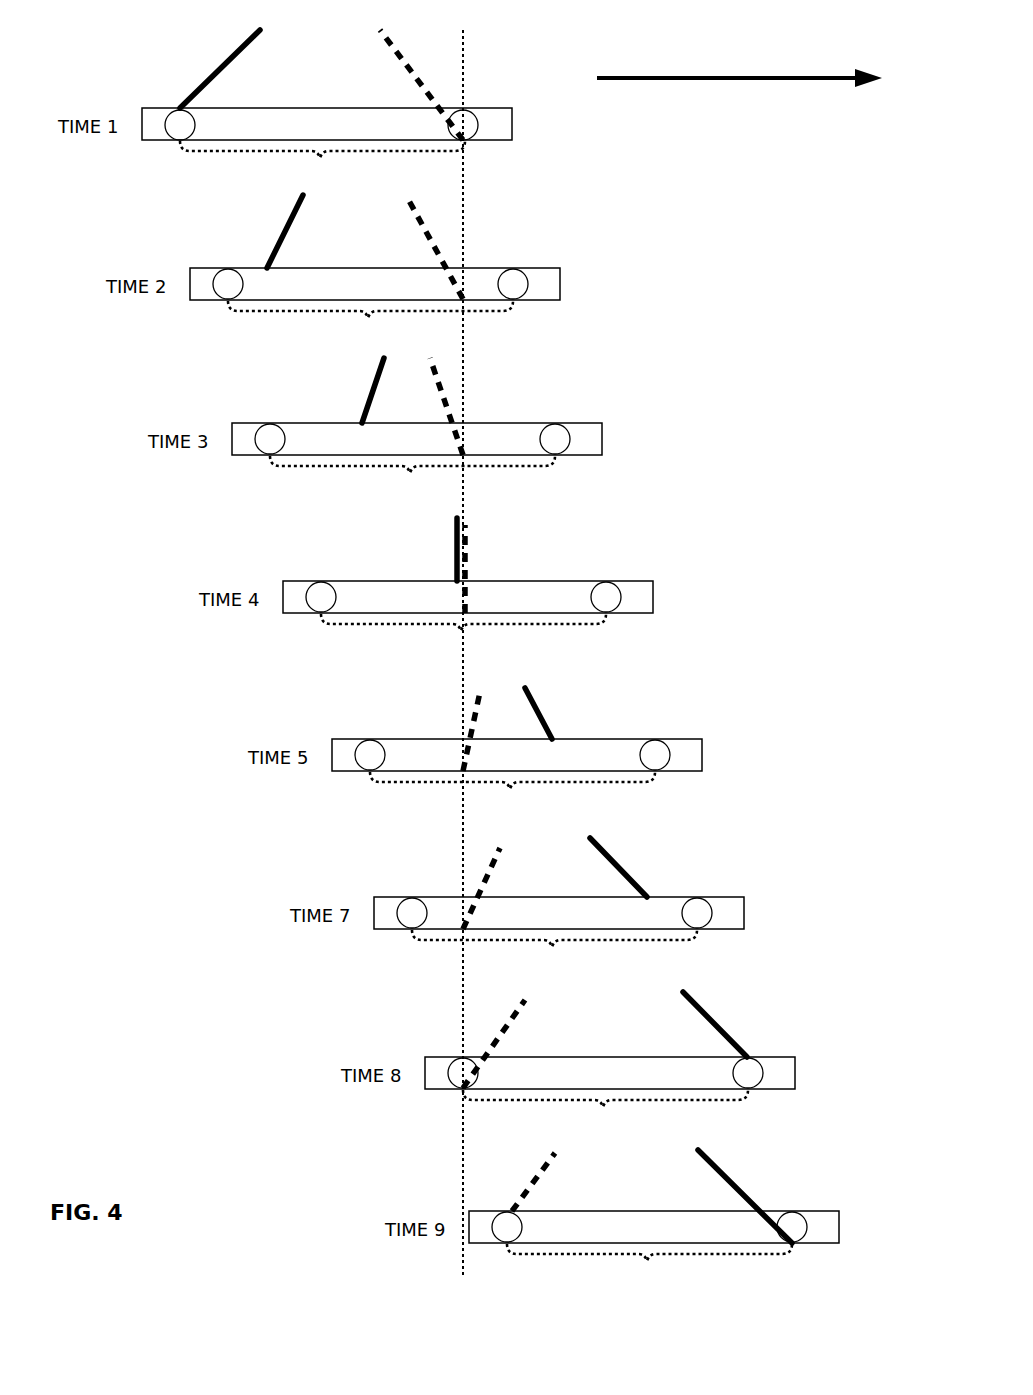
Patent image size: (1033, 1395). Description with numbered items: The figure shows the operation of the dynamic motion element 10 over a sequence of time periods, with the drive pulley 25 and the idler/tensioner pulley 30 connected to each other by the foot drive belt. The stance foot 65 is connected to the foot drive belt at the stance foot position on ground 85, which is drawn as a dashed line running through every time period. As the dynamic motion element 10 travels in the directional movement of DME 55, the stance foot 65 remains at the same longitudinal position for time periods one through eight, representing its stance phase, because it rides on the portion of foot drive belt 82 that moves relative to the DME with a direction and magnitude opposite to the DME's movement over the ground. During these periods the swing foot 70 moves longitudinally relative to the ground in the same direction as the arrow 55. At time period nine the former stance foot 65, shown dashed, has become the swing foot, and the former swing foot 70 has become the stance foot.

The dynamic motion element 10 is at (330, 125).
The drive pulley 25 is at (168, 120).
The idler/tensioner pulley 30 is at (478, 125).
The directional movement of DME 55 is at (717, 79).
The stance foot 65 is at (423, 90).
The swing foot 70 is at (210, 72).
The portion of foot drive belt 82 is at (320, 158).
The stance foot position on ground 85 is at (463, 30).